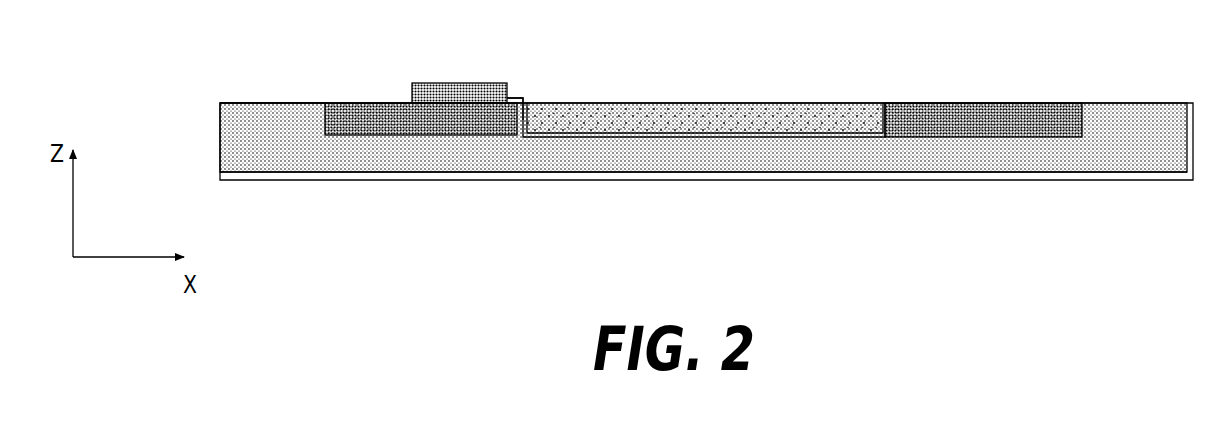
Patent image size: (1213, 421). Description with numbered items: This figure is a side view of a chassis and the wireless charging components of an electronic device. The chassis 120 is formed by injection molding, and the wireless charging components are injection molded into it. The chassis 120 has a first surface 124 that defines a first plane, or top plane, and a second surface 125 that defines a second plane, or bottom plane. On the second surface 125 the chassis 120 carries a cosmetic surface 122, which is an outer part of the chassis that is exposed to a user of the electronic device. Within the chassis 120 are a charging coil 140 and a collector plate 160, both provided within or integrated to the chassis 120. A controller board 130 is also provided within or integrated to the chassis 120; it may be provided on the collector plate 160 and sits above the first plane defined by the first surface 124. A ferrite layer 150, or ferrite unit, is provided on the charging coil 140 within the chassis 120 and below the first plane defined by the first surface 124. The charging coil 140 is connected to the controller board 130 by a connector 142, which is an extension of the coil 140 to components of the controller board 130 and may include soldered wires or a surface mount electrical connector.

The chassis 120 is at (288, 155).
The cosmetic surface 122 is at (959, 185).
The first surface 124 is at (271, 103).
The second surface 125 is at (427, 170).
The controller board 130 is at (426, 81).
The charging coil 140 is at (830, 135).
The connector 142 is at (524, 100).
The ferrite layer 150 is at (725, 97).
The collector plate 160 is at (492, 140).